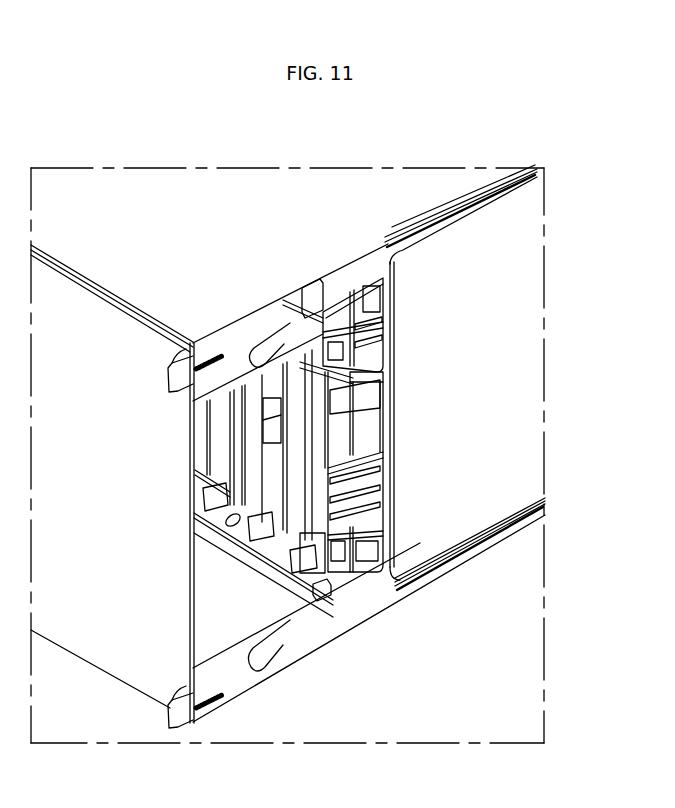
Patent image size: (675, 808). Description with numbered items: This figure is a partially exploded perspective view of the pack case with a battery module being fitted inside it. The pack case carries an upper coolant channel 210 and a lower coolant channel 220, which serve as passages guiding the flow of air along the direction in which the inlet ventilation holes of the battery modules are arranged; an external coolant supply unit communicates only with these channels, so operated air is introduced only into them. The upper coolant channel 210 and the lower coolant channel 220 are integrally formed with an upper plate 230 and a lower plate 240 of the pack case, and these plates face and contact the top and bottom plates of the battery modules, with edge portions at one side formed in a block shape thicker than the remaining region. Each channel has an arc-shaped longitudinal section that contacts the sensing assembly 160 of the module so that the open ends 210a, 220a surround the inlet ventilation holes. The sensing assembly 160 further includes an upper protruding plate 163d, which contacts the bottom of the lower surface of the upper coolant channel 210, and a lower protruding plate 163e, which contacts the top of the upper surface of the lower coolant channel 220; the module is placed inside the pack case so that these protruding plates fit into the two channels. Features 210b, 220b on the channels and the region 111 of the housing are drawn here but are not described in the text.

The housing side wall 111 is at (505, 265).
The sensing assembly 160 is at (374, 578).
The upper protruding plate 163d is at (308, 342).
The lower protruding plate 163e is at (314, 594).
The upper coolant channel 210 is at (265, 334).
The open end 210a is at (317, 314).
The upper plate slot 210b is at (285, 335).
The lower coolant channel 220 is at (261, 650).
The open end 220a is at (323, 590).
The lower plate slot 220b is at (273, 623).
The upper plate 230 is at (422, 217).
The lower plate 240 is at (482, 558).